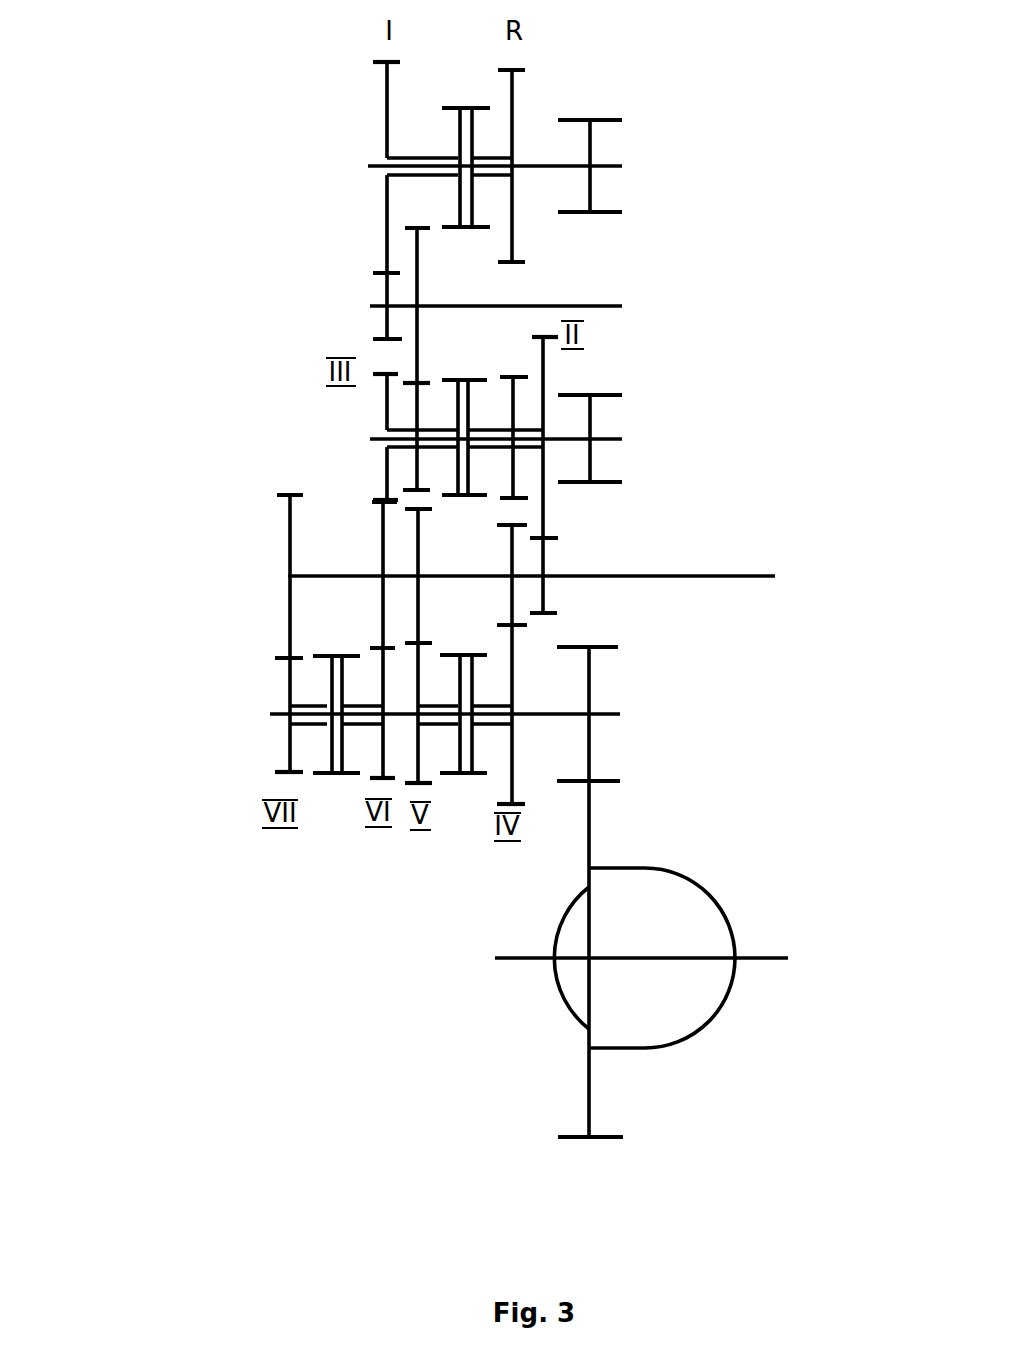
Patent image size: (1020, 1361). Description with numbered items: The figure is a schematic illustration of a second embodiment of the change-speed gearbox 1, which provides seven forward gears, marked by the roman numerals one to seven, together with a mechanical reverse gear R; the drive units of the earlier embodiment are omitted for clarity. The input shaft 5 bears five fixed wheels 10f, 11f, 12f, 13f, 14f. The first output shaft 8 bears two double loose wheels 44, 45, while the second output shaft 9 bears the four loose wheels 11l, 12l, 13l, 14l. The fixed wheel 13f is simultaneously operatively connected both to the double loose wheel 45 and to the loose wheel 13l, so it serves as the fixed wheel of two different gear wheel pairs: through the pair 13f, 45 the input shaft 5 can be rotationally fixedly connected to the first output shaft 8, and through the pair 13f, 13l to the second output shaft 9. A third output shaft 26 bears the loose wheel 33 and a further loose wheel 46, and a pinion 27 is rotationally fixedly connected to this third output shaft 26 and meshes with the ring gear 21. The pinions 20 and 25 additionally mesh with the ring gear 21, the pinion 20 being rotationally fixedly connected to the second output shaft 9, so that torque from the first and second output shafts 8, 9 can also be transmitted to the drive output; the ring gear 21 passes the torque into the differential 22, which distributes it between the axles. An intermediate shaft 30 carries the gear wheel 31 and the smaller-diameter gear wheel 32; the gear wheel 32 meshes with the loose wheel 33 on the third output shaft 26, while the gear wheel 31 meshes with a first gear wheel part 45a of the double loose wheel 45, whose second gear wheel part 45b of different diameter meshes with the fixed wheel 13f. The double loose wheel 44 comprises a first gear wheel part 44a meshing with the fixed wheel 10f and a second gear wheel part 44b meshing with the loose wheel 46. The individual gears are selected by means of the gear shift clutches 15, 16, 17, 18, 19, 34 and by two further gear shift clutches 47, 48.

The change-speed gearbox 1 is at (132, 192).
The input shaft 5 is at (695, 575).
The first output shaft 8 is at (370, 441).
The second output shaft 9 is at (275, 715).
The fixed wheel 10f is at (547, 552).
The fixed wheel 11f is at (510, 553).
The fixed wheel 12f is at (420, 615).
The fixed wheel 13f is at (382, 550).
The fixed wheel 14f is at (293, 545).
The loose wheel 11l is at (513, 683).
The loose wheel 12l is at (423, 768).
The loose wheel 13l is at (385, 763).
The loose wheel 14l is at (288, 757).
The gear shift clutch 15 is at (447, 378).
The gear shift clutch 16 is at (473, 377).
The gear shift clutch 17 is at (345, 653).
The gear shift clutch 18 is at (465, 775).
The gear shift clutch 19 is at (475, 776).
The pinion 20 is at (613, 648).
The ring gear 21 is at (603, 1138).
The differential 22 is at (674, 938).
The pinion 25 is at (608, 395).
The third output shaft 26 is at (372, 167).
The pinion 27 is at (607, 117).
The intermediate shaft 30 is at (370, 307).
The gear wheel 31 is at (423, 289).
The gear wheel 32 is at (382, 289).
The loose wheel 33 is at (383, 98).
The gear shift clutch 34 is at (445, 105).
The double loose wheel 44 is at (555, 368).
The first gear wheel part 44a is at (547, 390).
The second gear wheel part 44b is at (515, 408).
The double loose wheel 45 is at (373, 407).
The first gear wheel part 45a is at (423, 385).
The second gear wheel part 45b is at (383, 413).
The loose wheel 46 is at (517, 90).
The gear shift clutch 47 is at (323, 775).
The gear shift clutch 48 is at (475, 105).